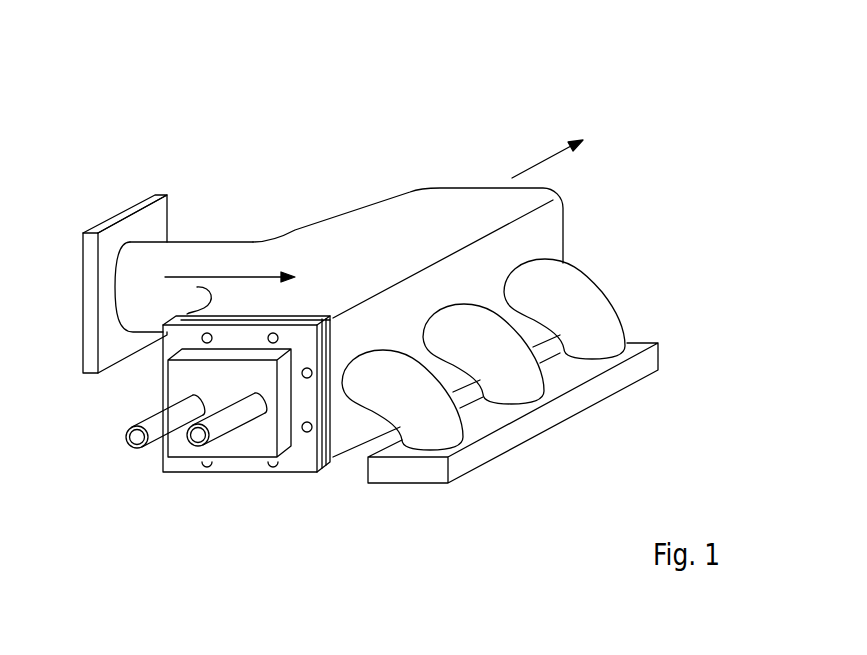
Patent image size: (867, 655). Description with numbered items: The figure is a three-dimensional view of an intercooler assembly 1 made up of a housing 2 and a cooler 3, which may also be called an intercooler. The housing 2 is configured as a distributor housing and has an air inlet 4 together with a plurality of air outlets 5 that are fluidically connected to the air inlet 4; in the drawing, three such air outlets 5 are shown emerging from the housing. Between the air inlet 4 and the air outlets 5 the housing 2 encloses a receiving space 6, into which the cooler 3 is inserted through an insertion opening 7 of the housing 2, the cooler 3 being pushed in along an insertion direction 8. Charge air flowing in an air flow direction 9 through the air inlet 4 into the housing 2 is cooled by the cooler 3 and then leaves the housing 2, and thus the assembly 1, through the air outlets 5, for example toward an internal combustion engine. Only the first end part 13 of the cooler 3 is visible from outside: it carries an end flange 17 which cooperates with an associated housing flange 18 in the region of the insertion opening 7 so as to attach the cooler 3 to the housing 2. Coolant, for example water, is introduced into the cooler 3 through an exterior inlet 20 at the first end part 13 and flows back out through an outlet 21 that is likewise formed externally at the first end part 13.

The intercooler assembly 1 is at (684, 146).
The housing 2 is at (577, 233).
The cooler 3 is at (150, 388).
The air inlet 4 is at (110, 285).
The air outlets 5 is at (433, 450).
The receiving space 6 is at (380, 237).
The insertion opening 7 is at (297, 455).
The insertion direction 8 is at (543, 157).
The air flow direction 9 is at (223, 276).
The first end part 13 is at (236, 486).
The end flange 17 is at (325, 468).
The housing flange 18 is at (330, 464).
The inlet 20 is at (128, 441).
The outlet 21 is at (192, 443).